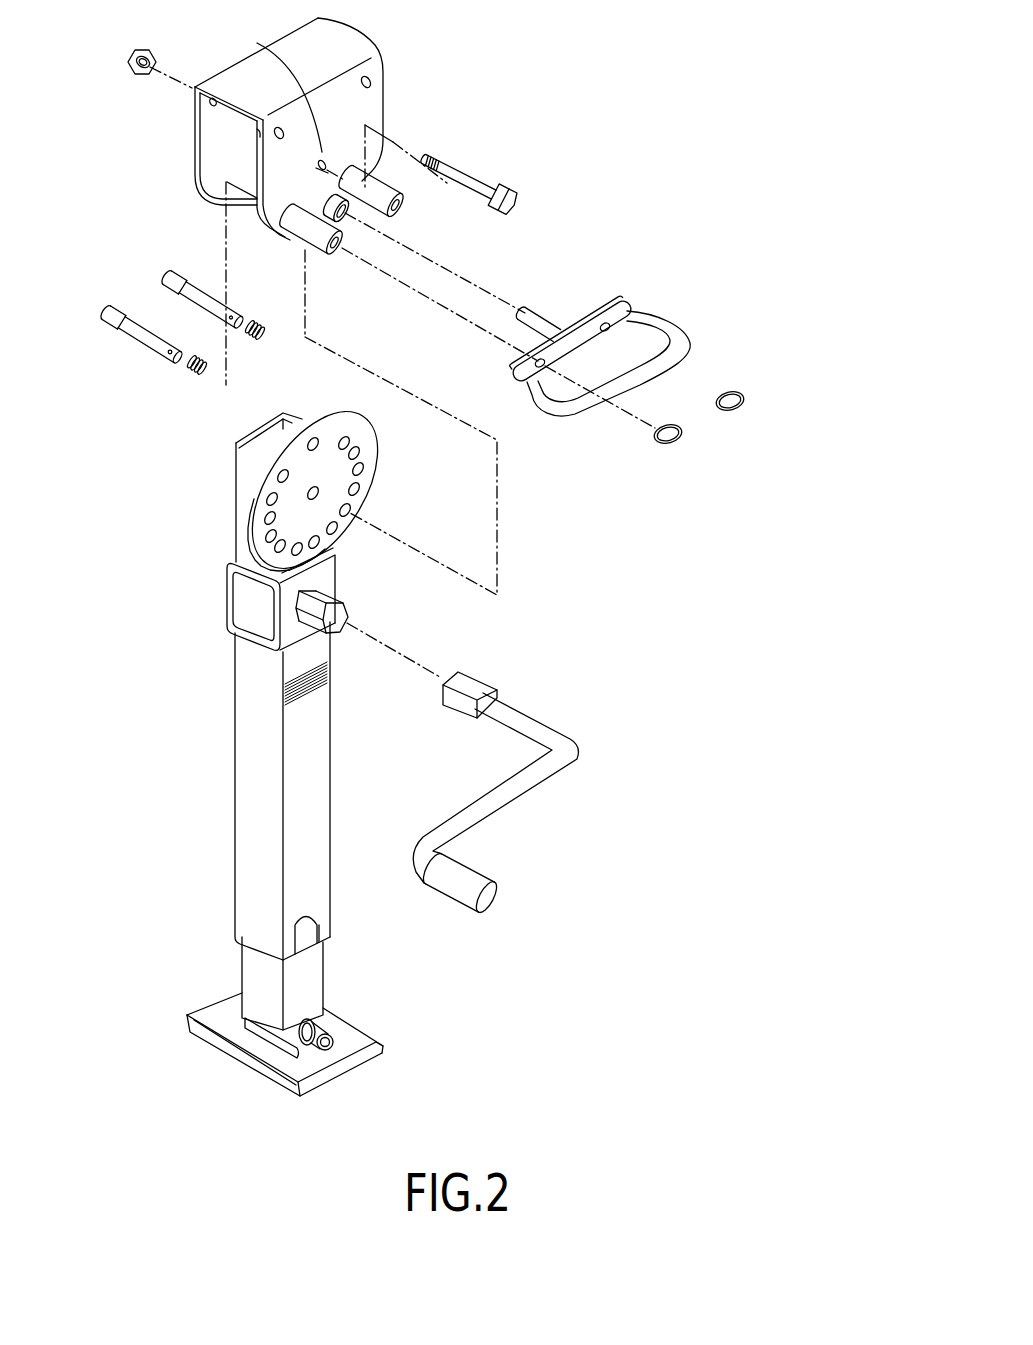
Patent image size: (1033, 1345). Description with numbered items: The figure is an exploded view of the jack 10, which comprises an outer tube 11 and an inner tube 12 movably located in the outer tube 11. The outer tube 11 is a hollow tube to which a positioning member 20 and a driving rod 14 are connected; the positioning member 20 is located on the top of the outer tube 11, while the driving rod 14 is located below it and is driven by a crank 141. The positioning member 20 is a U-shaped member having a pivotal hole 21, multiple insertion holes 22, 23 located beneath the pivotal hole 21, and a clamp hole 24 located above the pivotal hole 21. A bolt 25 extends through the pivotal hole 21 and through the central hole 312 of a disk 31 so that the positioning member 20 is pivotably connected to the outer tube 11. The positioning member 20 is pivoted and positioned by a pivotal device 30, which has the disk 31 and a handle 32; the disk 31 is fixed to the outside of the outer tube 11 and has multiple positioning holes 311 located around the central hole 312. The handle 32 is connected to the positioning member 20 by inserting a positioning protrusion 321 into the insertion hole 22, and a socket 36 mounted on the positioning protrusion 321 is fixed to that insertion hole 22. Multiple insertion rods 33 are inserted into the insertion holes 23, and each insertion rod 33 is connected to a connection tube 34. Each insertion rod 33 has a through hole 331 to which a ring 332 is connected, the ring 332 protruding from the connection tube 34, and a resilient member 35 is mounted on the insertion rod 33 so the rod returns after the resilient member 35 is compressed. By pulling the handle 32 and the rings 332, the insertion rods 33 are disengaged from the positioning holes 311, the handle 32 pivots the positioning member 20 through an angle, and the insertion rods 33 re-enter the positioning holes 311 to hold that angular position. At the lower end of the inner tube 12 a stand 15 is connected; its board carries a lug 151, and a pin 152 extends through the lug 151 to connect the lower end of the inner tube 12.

The jack 10 is at (186, 667).
The outer tube 11 is at (236, 756).
The inner tube 12 is at (322, 964).
The driving rod 14 is at (340, 630).
The crank 141 is at (558, 776).
The stand 15 is at (312, 1061).
The lug 151 is at (303, 1047).
The pin 152 is at (300, 1027).
The positioning member 20 is at (374, 108).
The pivotal hole 21 is at (270, 52).
The insertion hole 22 is at (318, 193).
The insertion hole 23 is at (285, 212).
The clamp hole 24 is at (372, 84).
The bolt 25 is at (472, 179).
The pivotal device 30 is at (662, 208).
The disk 31 is at (338, 481).
The positioning holes 311 is at (364, 468).
The central hole 312 is at (318, 486).
The handle 32 is at (568, 410).
The positioning protrusion 321 is at (530, 320).
The insertion rods 33 is at (147, 343).
The through hole 331 is at (167, 355).
The ring 332 is at (662, 443).
The connection tube 34 is at (300, 228).
The resilient member 35 is at (190, 377).
The socket 36 is at (372, 213).